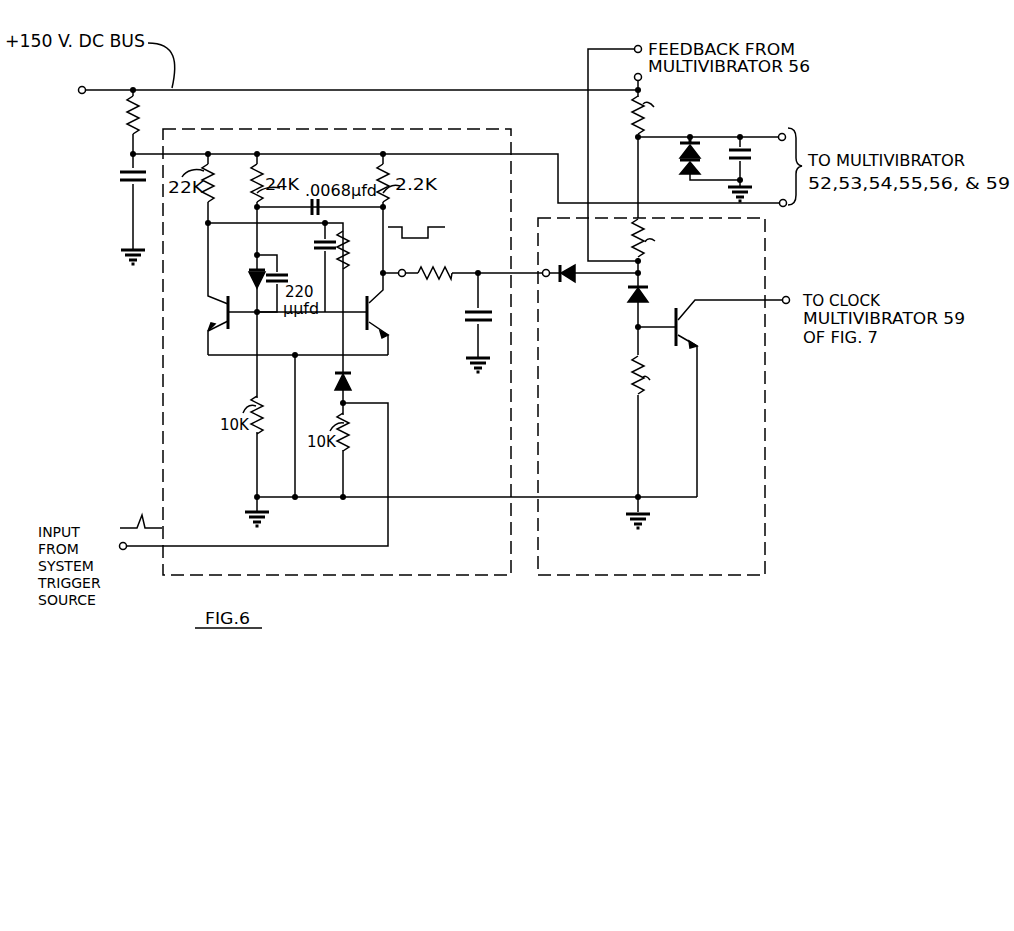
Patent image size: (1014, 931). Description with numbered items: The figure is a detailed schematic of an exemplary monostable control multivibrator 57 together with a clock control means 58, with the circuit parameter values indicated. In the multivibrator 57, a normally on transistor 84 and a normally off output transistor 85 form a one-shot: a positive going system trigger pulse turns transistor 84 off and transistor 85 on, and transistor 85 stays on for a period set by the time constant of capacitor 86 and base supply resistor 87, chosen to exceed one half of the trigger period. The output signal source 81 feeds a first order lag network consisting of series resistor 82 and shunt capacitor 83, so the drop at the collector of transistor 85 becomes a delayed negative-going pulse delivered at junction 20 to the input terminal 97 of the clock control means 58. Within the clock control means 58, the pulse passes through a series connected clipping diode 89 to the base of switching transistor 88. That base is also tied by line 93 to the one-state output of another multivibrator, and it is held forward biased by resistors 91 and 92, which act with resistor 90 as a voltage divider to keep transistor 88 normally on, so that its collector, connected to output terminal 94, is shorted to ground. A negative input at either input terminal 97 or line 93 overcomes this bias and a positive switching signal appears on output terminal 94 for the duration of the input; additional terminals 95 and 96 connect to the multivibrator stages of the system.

The output junction 20 is at (479, 271).
The monostable control multivibrator 57 is at (163, 338).
The clock control means 58 is at (766, 449).
The output signal source 81 is at (403, 269).
The series resistor 82 is at (435, 271).
The shunt capacitor 83 is at (465, 312).
The normally on transistor 84 is at (227, 297).
The output transistor 85 is at (377, 298).
The capacitor 86 is at (322, 250).
The base supply resistor 87 is at (345, 248).
The switching transistor 88 is at (682, 312).
The clipping diode 89 is at (566, 283).
The resistor 90 is at (634, 372).
The forward-biasing resistor 91 is at (632, 118).
The forward-biasing resistor 92 is at (633, 240).
The line 93 is at (585, 58).
The output terminal 94 is at (787, 296).
The output terminal 95 is at (783, 132).
The output terminal 96 is at (786, 206).
The input terminal 97 is at (547, 268).